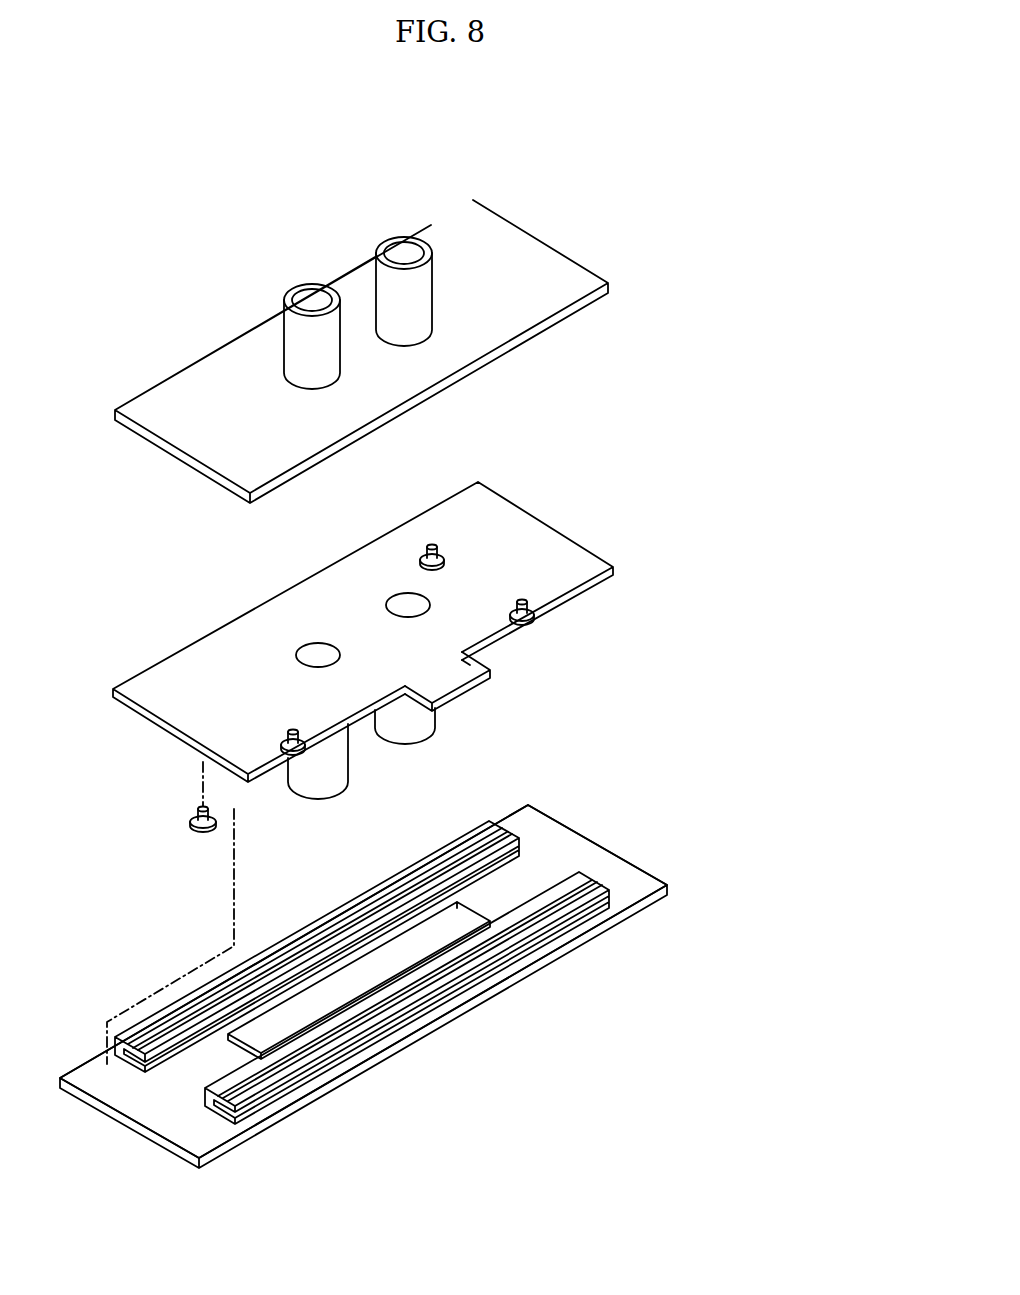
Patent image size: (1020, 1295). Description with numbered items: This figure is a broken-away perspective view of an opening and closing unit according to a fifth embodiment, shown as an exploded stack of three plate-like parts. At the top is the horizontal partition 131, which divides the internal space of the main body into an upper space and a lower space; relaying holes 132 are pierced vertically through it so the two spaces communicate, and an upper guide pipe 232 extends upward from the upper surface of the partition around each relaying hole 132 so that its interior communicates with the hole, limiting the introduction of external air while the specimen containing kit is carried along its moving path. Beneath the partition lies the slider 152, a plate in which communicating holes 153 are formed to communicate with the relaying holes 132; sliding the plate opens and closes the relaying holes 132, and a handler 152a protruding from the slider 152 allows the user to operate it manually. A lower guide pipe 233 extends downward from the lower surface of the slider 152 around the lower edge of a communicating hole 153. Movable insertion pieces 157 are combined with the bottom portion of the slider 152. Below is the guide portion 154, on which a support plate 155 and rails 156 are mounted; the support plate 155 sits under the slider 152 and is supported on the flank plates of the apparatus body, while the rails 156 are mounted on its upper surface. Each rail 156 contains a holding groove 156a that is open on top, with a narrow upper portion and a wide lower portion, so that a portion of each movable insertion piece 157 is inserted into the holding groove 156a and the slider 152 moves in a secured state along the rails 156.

The horizontal partition 131 is at (510, 240).
The relaying hole 132 is at (311, 292).
The upper guide pipe 232 is at (418, 297).
The slider 152 is at (563, 550).
The handler 152a is at (490, 676).
The communicating hole 153 is at (301, 647).
The movable insertion piece 157 is at (540, 617).
The lower guide pipe 233 is at (318, 772).
The guide portion 154 is at (645, 905).
The support plate 155 is at (647, 880).
The rail 156 is at (453, 990).
The holding groove 156a is at (341, 1034).